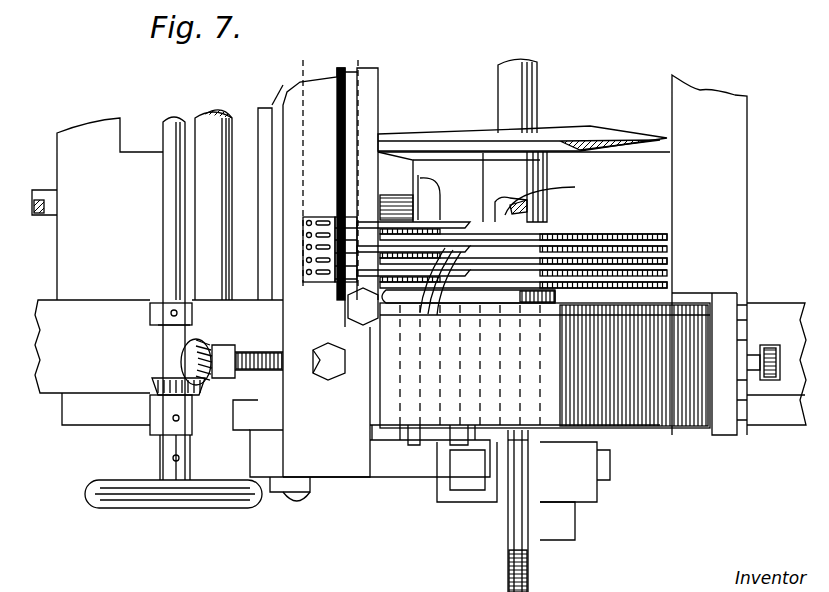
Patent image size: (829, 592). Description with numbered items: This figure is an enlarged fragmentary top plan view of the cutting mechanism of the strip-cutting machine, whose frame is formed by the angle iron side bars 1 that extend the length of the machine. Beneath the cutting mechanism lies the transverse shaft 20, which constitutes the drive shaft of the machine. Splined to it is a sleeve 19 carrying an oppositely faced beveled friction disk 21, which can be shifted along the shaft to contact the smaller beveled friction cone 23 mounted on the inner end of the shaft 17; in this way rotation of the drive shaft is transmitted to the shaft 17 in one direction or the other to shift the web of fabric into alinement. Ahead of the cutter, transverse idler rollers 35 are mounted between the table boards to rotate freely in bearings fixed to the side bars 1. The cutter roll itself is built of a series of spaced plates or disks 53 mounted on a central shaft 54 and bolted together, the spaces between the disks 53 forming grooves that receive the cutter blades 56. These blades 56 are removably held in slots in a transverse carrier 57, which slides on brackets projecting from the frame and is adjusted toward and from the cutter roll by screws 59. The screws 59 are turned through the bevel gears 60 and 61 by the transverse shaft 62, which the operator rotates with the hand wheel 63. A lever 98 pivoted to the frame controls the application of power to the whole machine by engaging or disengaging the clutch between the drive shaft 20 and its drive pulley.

The angle iron side bars 1 is at (790, 410).
The shaft 17 is at (42, 190).
The sleeve 19 is at (487, 175).
The transverse shaft 20 is at (500, 78).
The beveled friction disk 21 is at (628, 134).
The beveled friction cone 23 is at (398, 134).
The transverse idler rollers 35 is at (232, 125).
The plates or disks 53 is at (635, 230).
The central shaft 54 is at (550, 199).
The cutter blades 56 is at (440, 302).
The transverse carrier 57 is at (348, 470).
The screws 59 is at (272, 352).
The bevel gear 60 is at (181, 348).
The bevel gear 61 is at (158, 384).
The transverse shaft 62 is at (165, 217).
The hand wheel 63 is at (205, 512).
The lever 98 is at (510, 570).